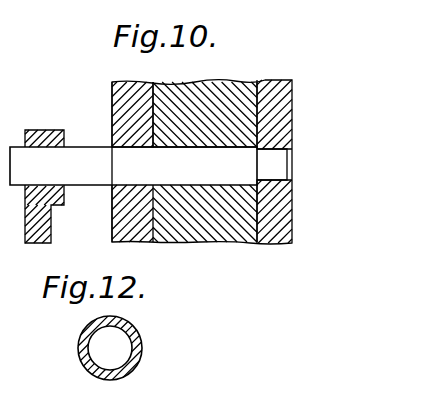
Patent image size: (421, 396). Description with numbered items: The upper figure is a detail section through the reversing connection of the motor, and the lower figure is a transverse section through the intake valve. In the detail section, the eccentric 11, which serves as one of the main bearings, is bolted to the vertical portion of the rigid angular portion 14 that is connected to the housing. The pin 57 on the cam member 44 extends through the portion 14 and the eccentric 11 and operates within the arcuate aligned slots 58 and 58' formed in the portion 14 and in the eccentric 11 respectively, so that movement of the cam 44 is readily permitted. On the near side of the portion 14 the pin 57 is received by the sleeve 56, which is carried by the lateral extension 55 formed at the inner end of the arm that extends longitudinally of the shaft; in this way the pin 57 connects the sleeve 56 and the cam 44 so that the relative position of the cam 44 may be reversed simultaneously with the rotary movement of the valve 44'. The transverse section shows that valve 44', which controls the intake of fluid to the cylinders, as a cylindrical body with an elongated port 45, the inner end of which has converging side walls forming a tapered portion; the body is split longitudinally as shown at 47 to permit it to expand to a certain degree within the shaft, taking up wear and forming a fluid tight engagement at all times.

In FIG. 10, the rigid angular portion 14 is at (121, 102).
In FIG. 10, the arcuate slot 58 is at (116, 114).
In FIG. 10, the arcuate slot 58' is at (205, 104).
In FIG. 10, the pin 57 is at (100, 167).
In FIG. 10, the sleeve 56 is at (45, 118).
In FIG. 10, the lateral extension 55 is at (53, 238).
In FIG. 10, the eccentric 11 is at (200, 240).
In FIG. 10, the cam member 44 is at (274, 177).
In FIG. 12, the elongated port 45 is at (136, 312).
In FIG. 12, the longitudinal split 47 is at (131, 335).
In FIG. 12, the valve 44' is at (128, 348).